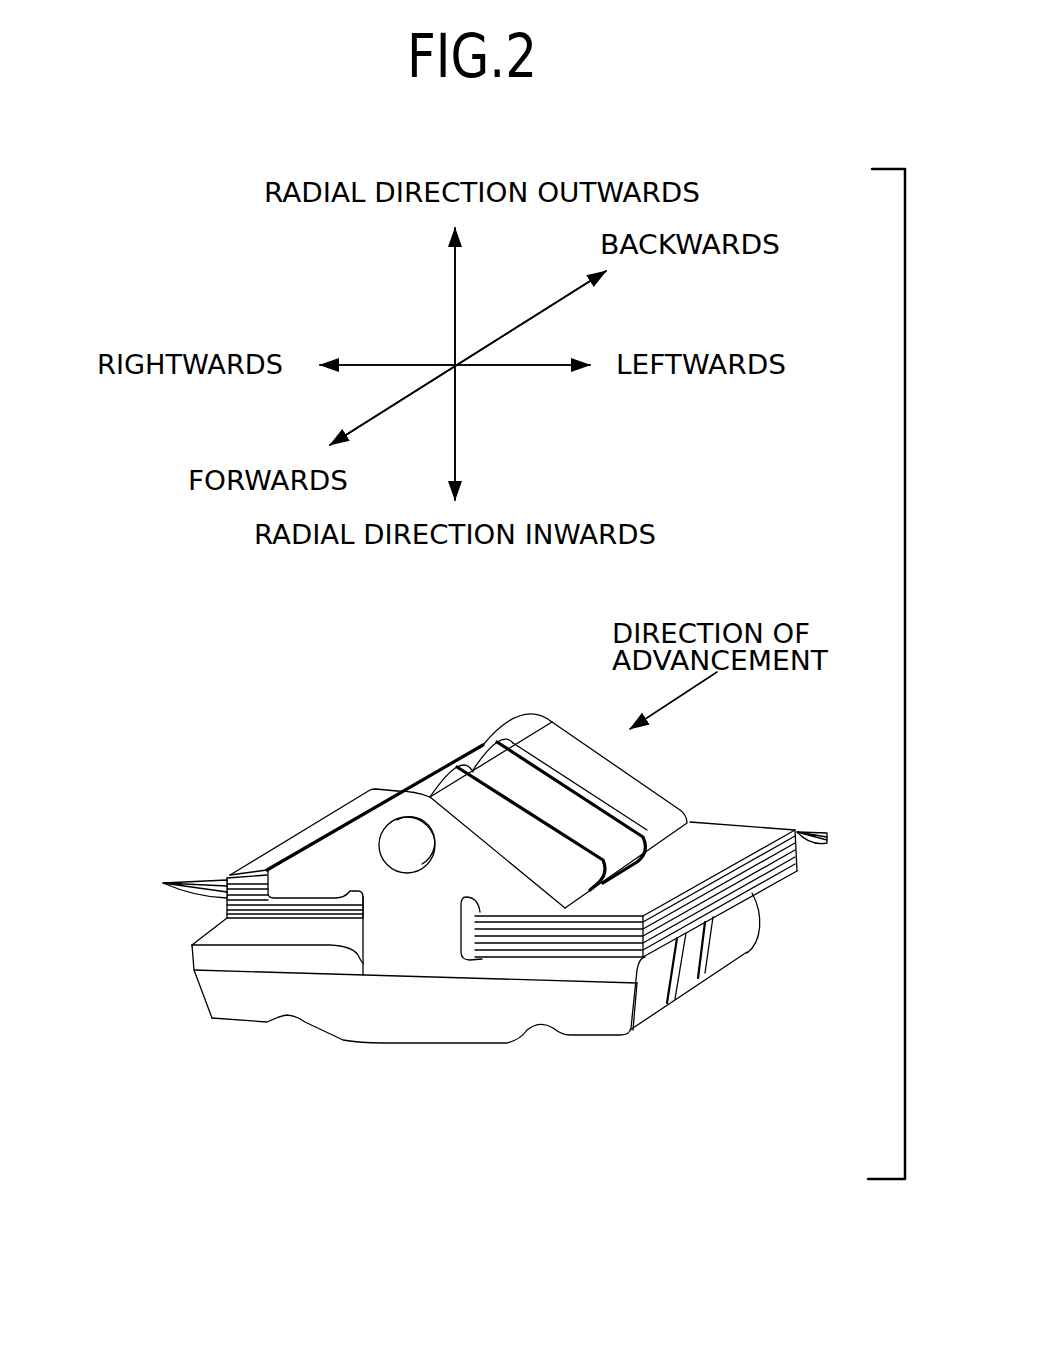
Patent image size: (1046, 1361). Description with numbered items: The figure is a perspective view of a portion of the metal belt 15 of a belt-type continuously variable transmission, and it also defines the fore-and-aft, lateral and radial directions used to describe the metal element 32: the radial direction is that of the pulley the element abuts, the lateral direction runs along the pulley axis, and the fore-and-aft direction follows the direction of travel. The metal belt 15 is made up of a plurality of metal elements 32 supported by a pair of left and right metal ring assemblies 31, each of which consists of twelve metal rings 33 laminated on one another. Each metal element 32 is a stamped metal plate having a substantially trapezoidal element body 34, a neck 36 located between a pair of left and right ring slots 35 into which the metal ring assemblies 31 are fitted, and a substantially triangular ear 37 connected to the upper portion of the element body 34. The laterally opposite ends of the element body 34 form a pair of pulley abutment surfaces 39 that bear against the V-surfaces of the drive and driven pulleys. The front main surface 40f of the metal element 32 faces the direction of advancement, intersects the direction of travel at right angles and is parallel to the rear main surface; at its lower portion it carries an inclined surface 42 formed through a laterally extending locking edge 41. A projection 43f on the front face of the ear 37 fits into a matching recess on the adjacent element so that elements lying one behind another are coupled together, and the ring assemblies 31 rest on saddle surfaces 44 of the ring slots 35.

The metal belt 15 is at (458, 690).
The metal ring assembly 31 is at (238, 858).
The metal element 32 is at (518, 1079).
The metal ring 33 is at (496, 861).
The element body 34 is at (227, 1007).
The ring slot 35 is at (481, 958).
The neck 36 is at (413, 952).
The ear 37 is at (345, 850).
The pulley abutment surface 39 is at (647, 1005).
The front main surface 40f is at (440, 930).
The locking edge 41 is at (328, 978).
The inclined surface 42 is at (433, 1038).
The projection 43f is at (398, 843).
The saddle surface 44 is at (273, 930).